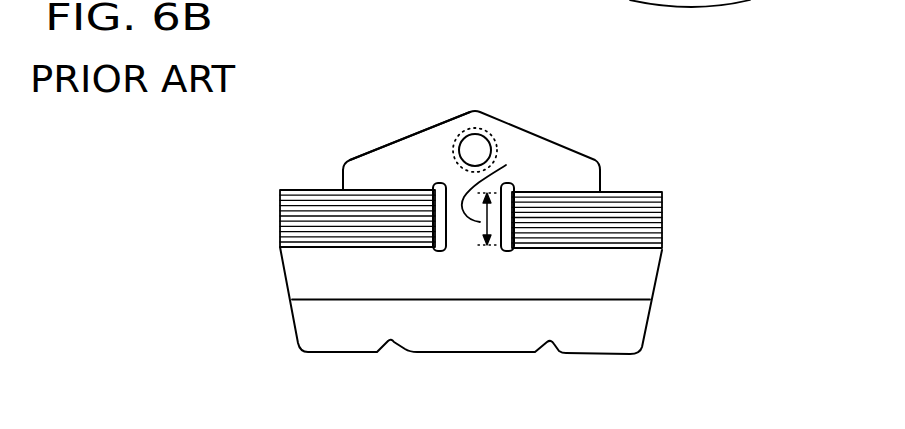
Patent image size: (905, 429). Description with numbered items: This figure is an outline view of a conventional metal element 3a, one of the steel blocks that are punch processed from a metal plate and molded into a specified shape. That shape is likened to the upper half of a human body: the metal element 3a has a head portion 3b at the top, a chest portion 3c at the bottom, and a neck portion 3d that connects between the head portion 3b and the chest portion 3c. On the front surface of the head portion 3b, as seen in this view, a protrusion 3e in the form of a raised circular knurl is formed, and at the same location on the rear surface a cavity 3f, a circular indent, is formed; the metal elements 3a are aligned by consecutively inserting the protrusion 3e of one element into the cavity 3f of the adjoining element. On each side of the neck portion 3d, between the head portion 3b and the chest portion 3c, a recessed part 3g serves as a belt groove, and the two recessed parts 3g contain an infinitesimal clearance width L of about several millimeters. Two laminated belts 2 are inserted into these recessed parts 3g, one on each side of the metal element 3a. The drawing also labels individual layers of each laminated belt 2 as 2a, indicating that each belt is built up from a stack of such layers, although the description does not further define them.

The laminated belt 2 is at (160, 163).
The conductor wire 2a is at (280, 192).
The metal element 3a is at (560, 133).
The head portion 3b is at (427, 148).
The chest portion 3c is at (367, 338).
The neck portion 3d is at (458, 224).
The protrusion 3e is at (473, 150).
The cavity 3f is at (487, 133).
The recessed part 3g is at (330, 180).